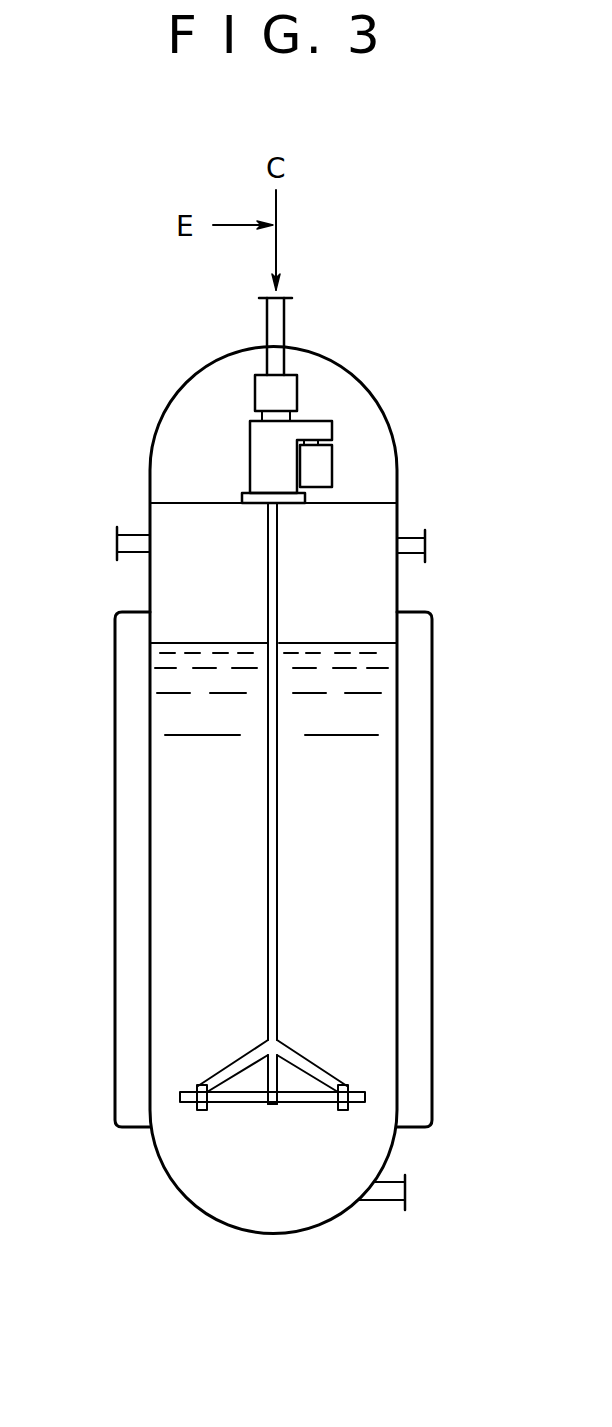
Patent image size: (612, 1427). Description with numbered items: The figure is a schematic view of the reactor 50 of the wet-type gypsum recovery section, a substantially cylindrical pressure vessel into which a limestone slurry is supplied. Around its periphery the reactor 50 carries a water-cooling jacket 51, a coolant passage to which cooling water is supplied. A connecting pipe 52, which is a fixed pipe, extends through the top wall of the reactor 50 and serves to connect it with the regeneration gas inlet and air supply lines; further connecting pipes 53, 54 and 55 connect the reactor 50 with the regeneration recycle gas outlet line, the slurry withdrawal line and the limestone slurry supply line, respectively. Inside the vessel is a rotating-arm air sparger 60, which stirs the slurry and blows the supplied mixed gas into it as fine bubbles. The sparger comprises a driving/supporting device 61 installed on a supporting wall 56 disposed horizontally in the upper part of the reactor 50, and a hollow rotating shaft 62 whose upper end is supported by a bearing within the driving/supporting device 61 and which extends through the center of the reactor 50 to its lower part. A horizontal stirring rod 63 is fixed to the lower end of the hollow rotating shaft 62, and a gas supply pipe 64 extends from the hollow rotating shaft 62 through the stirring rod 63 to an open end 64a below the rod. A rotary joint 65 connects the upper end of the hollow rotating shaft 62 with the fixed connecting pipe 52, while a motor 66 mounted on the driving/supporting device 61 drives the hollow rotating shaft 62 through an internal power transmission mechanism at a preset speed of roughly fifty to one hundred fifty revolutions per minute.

The reactor 50 is at (180, 1195).
The water-cooling jacket 51 is at (115, 675).
The connecting pipe 52 is at (267, 317).
The connecting pipe 53 is at (132, 535).
The connecting pipe 54 is at (390, 1202).
The connecting pipe 55 is at (407, 538).
The supporting wall 56 is at (357, 503).
The rotating-arm air sparger 60 is at (305, 1134).
The driving/supporting device 61 is at (250, 452).
The hollow rotating shaft 62 is at (267, 855).
The horizontal stirring rod 63 is at (252, 1104).
The gas supply pipe 64 is at (210, 1074).
The open end 64a is at (197, 1106).
The rotary joint 65 is at (298, 390).
The motor 66 is at (333, 462).